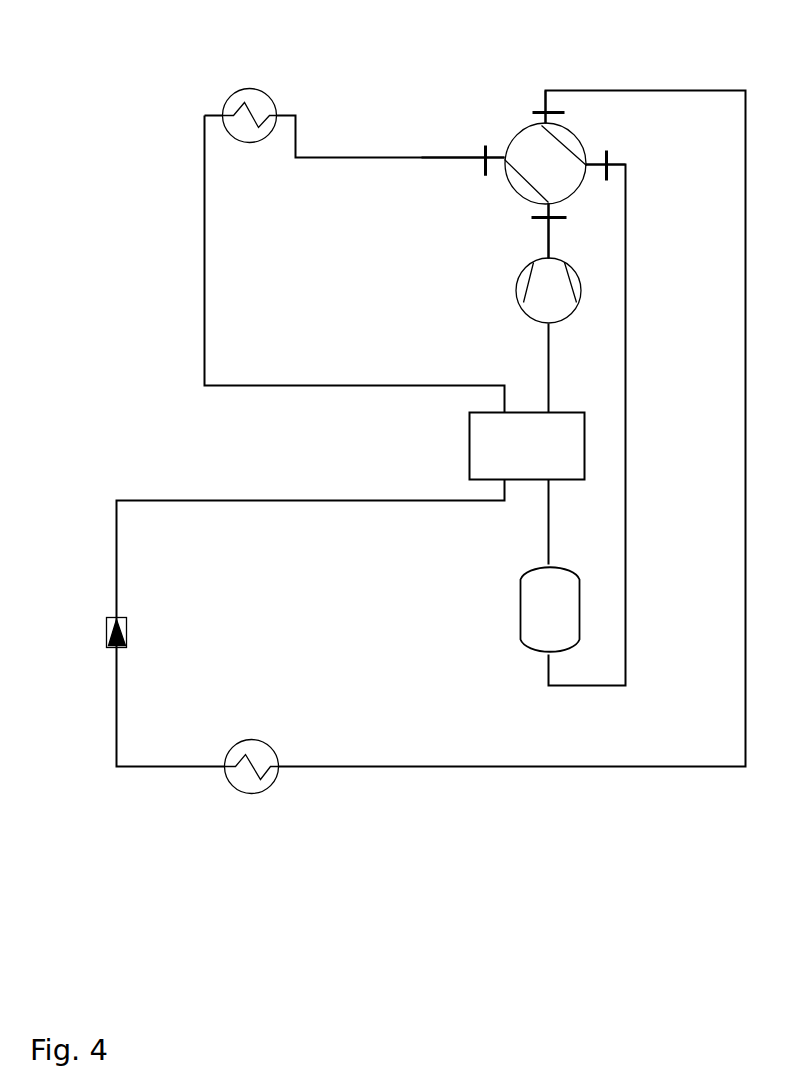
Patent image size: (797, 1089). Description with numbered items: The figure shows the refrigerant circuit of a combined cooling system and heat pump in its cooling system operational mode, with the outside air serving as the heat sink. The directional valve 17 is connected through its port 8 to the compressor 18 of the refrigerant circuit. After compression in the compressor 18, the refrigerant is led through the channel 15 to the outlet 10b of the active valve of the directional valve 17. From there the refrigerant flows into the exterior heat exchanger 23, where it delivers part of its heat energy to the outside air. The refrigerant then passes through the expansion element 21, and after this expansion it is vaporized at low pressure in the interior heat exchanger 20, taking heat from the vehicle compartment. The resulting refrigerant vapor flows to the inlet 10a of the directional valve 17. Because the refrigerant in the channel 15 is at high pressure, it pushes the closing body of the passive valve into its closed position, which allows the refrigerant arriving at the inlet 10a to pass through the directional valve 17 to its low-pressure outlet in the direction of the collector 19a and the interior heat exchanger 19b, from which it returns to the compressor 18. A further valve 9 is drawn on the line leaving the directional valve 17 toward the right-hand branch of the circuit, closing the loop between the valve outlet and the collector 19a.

The exterior heat exchanger 23 is at (261, 100).
The directional valve 17 is at (515, 135).
The inlet 10a is at (533, 105).
The outlet 10b is at (481, 143).
The channel 15 is at (492, 160).
The valve 9 is at (607, 150).
The port 8 is at (563, 220).
The compressor 18 is at (547, 293).
The interior heat exchanger 19b is at (468, 452).
The collector 19a is at (520, 607).
The expansion element 21 is at (104, 630).
The interior heat exchanger 20 is at (223, 775).